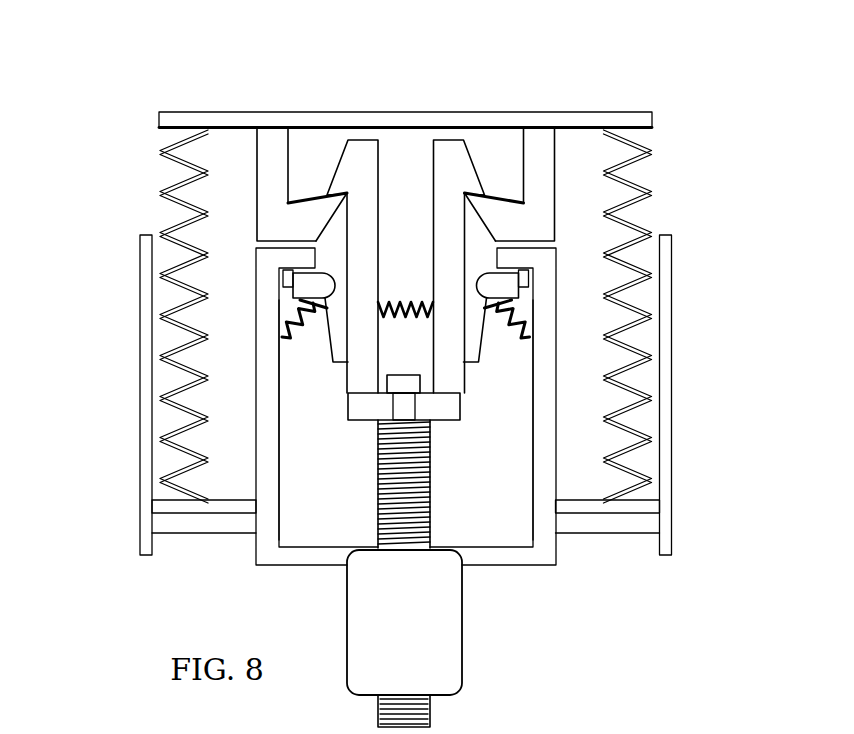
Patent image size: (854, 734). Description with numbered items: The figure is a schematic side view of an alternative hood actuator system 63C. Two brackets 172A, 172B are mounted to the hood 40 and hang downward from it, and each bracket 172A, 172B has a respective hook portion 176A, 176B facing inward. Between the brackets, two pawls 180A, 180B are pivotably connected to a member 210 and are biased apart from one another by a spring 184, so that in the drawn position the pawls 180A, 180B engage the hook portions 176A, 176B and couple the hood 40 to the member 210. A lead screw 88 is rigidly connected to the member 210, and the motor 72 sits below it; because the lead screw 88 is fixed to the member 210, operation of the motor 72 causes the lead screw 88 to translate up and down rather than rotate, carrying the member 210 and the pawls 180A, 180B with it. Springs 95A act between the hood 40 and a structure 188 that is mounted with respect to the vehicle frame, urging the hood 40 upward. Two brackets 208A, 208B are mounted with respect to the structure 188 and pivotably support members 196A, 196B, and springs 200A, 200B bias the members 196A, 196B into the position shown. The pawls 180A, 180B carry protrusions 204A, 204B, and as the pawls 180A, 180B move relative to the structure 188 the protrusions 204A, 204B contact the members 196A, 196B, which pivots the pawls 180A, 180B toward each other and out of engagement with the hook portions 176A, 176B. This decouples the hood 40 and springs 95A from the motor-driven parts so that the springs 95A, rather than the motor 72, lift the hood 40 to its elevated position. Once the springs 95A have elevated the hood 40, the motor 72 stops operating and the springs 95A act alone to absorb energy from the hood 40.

The hood actuator system 63C is at (714, 161).
The hood 40 is at (340, 112).
The bracket 172A is at (272, 172).
The bracket 172B is at (540, 172).
The hook portion 176A is at (307, 217).
The hook portion 176B is at (503, 220).
The pawl 180A is at (385, 205).
The pawl 180B is at (440, 220).
The spring 184 is at (413, 300).
The springs 95A is at (162, 186).
The structure 188 is at (140, 467).
The member 196A is at (290, 283).
The member 196B is at (521, 283).
The spring 200A is at (292, 308).
The spring 200B is at (519, 308).
The protrusion 204A is at (335, 333).
The protrusion 204B is at (476, 333).
The bracket 208A is at (275, 516).
The bracket 208B is at (536, 516).
The member 210 is at (362, 422).
The lead screw 88 is at (440, 470).
The motor 72 is at (462, 612).